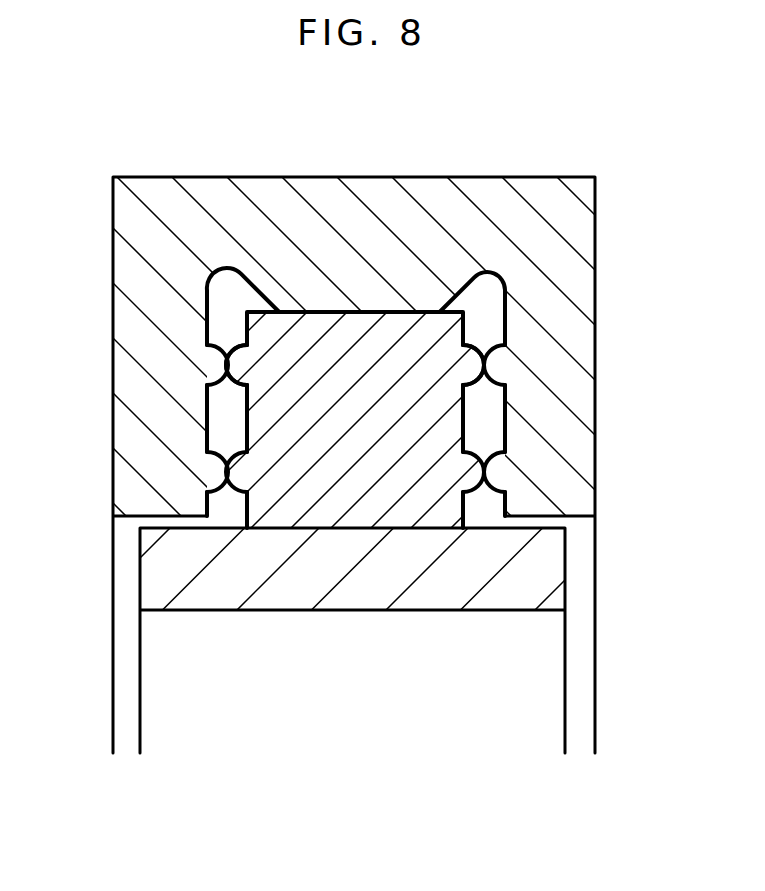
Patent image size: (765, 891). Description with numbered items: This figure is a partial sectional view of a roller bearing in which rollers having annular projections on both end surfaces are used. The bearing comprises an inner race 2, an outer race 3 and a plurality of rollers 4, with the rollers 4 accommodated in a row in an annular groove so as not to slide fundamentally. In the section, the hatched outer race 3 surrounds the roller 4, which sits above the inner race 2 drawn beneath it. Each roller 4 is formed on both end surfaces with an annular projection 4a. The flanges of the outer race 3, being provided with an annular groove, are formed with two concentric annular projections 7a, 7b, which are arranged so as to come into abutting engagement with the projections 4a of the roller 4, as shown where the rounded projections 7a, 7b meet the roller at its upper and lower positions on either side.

The inner race 2 is at (165, 568).
The outer race 3 is at (520, 205).
The roller 4 is at (383, 340).
The annular projection 4a is at (236, 362).
The concentric annular projection 7a is at (213, 364).
The concentric annular projection 7b is at (213, 475).